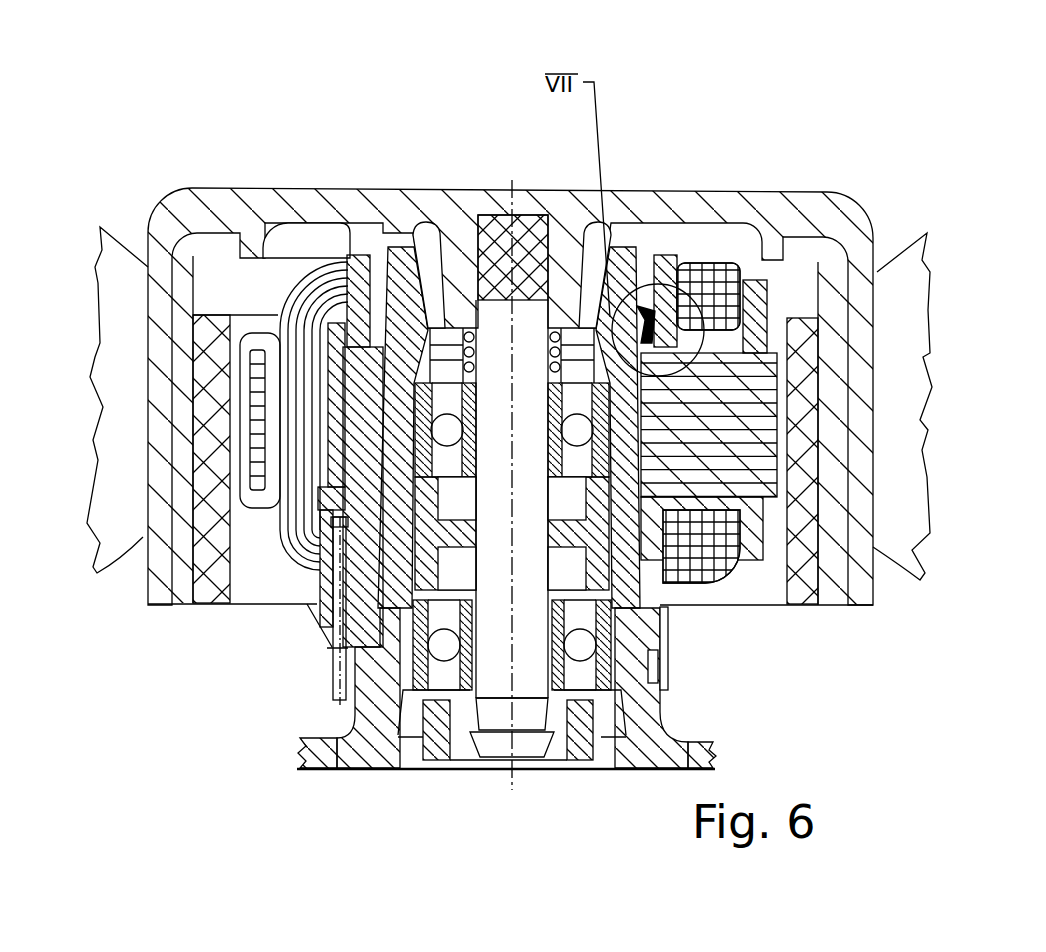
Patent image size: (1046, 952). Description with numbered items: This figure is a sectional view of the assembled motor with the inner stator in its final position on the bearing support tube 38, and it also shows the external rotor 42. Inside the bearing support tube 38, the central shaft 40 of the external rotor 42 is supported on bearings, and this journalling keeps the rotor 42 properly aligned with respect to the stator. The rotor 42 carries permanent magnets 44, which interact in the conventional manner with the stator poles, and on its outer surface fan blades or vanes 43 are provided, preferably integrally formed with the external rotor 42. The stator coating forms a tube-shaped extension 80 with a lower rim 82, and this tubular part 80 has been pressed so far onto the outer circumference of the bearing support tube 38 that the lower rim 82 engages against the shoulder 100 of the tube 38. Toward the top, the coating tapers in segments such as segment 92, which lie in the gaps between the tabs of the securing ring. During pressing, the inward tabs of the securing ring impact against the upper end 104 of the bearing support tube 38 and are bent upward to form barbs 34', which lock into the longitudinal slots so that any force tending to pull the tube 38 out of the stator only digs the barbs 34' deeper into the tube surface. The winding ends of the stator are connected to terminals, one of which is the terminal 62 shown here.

The external rotor 42 is at (303, 200).
The permanent magnets 44 is at (218, 313).
The fan blades or vanes 43 is at (123, 257).
The coating segment 92 is at (375, 312).
The upper end of bearing support tube 104 is at (410, 237).
The barbs 34' is at (699, 222).
The terminal 62 is at (333, 677).
The lower rim 82 is at (660, 685).
The tube-shaped extension 80 is at (660, 610).
The shoulder 100 is at (668, 633).
The bearing support tube 38 is at (420, 770).
The central shaft 40 is at (513, 745).